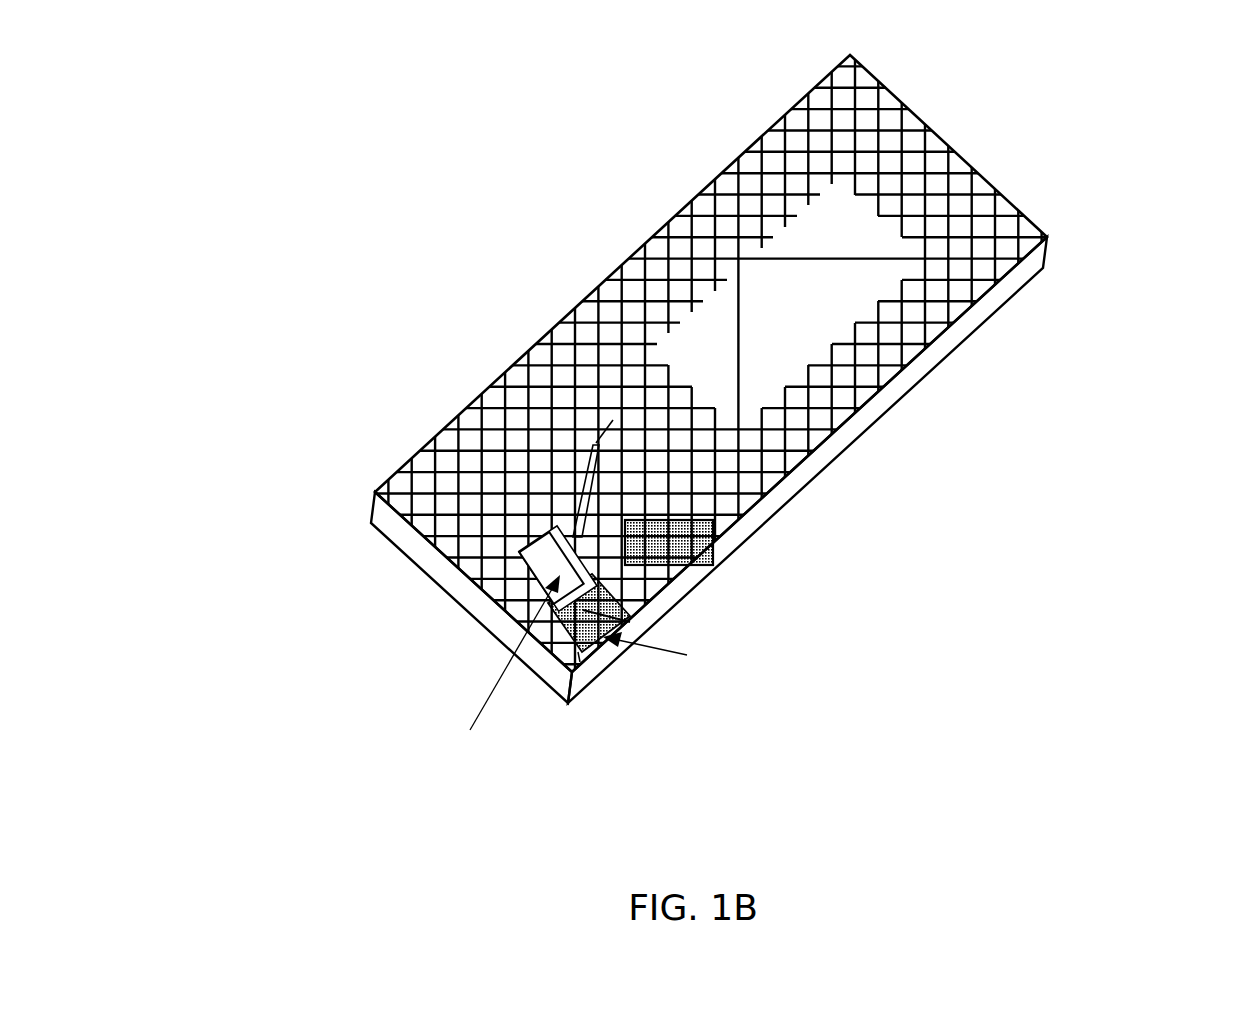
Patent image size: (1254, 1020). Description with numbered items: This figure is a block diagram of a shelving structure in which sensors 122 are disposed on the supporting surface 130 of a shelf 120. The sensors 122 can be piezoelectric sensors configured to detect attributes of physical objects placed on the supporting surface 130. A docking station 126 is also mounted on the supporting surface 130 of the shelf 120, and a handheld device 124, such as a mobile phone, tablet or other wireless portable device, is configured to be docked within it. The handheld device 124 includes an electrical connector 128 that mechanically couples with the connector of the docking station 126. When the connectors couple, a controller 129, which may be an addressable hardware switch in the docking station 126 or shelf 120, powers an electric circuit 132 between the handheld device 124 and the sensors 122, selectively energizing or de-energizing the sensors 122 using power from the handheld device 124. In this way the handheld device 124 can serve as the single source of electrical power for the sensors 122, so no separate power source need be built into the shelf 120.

The shelf 120 is at (1020, 290).
The sensors 122 is at (617, 322).
The handheld device 124 is at (540, 562).
The docking station 126 is at (578, 660).
The electrical connector 128 is at (600, 615).
The controller 129 is at (713, 545).
The supporting surface 130 is at (925, 122).
The electric circuit 132 is at (590, 472).